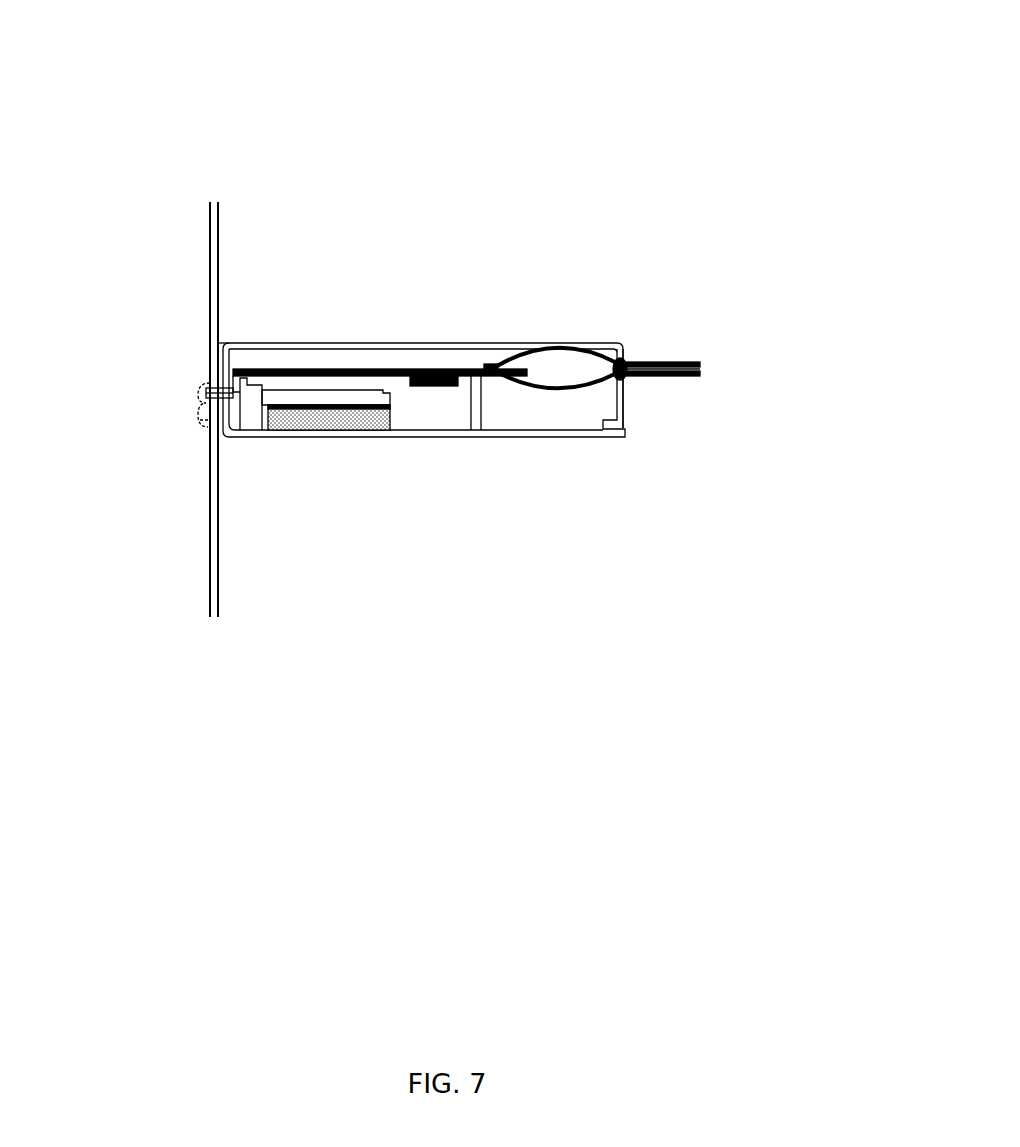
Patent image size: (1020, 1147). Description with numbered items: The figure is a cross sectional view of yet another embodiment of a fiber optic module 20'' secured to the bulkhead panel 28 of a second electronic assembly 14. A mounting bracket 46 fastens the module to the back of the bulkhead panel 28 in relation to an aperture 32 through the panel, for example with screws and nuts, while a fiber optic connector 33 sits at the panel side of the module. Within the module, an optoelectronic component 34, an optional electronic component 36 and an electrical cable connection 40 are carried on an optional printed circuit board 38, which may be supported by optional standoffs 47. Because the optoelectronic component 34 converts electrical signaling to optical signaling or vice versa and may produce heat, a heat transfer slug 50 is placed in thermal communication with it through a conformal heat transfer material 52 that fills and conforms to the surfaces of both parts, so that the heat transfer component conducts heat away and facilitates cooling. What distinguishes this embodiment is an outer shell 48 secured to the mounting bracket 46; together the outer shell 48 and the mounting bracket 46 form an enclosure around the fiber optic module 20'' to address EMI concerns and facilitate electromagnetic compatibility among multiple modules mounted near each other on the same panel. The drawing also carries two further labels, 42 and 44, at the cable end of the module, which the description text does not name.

The second electronic assembly 14 is at (185, 77).
The fiber optic module 20'' is at (675, 100).
The bulkhead panel 28 is at (218, 258).
The aperture 32 is at (212, 425).
The fiber optic connector 33 is at (203, 423).
The optoelectronic component 34 is at (252, 418).
The electronic component 36 is at (463, 367).
The printed circuit board 38 is at (392, 368).
The electrical cable connection 40 is at (500, 364).
The hub 42 is at (626, 360).
The antenna / probe 44 is at (690, 382).
The mounting bracket 46 is at (495, 437).
The standoffs 47 is at (482, 393).
The outer shell 48 is at (625, 402).
The heat transfer slug 50 is at (347, 430).
The heat transfer material 52 is at (390, 407).